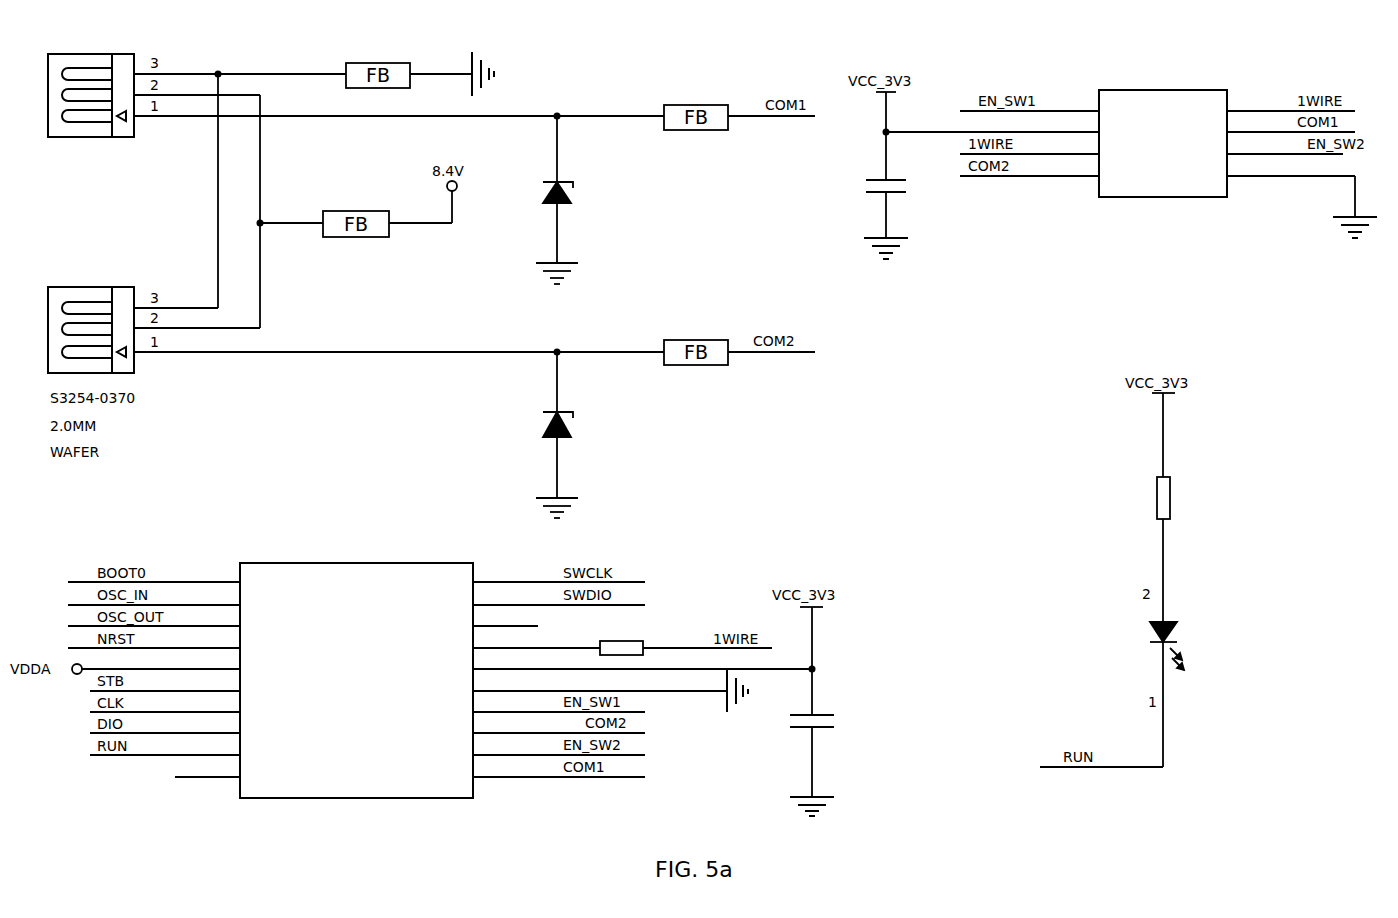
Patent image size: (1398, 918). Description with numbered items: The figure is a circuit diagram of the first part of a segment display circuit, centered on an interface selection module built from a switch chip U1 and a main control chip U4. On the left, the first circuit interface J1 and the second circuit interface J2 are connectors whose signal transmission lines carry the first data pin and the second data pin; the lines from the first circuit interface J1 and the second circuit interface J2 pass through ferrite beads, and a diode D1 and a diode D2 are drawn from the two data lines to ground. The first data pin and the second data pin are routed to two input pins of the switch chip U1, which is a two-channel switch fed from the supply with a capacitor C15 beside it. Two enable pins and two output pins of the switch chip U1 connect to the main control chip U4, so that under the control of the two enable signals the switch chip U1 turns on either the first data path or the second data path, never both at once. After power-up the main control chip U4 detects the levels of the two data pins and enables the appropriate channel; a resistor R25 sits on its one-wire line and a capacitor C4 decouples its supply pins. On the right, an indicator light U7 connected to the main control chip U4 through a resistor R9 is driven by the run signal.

The first circuit interface J1 is at (91, 82).
The second circuit interface J2 is at (91, 317).
The TVS diode D1 is at (574, 200).
The TVS diode D2 is at (576, 435).
The capacitor C15 100nF C15 is at (895, 196).
The switch chip U1 is at (1165, 148).
The main control chip U4 is at (355, 651).
The resistor R25 is at (601, 643).
The capacitor C4 is at (823, 701).
The resistor R9 is at (1180, 498).
The indicator light U7 is at (1182, 640).